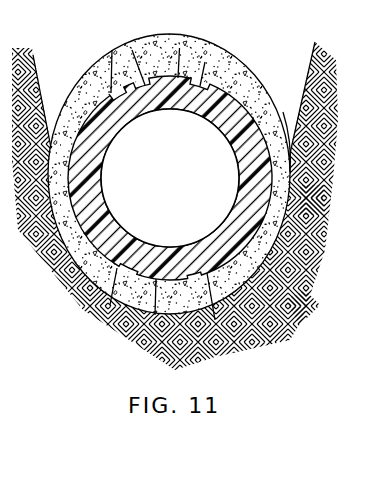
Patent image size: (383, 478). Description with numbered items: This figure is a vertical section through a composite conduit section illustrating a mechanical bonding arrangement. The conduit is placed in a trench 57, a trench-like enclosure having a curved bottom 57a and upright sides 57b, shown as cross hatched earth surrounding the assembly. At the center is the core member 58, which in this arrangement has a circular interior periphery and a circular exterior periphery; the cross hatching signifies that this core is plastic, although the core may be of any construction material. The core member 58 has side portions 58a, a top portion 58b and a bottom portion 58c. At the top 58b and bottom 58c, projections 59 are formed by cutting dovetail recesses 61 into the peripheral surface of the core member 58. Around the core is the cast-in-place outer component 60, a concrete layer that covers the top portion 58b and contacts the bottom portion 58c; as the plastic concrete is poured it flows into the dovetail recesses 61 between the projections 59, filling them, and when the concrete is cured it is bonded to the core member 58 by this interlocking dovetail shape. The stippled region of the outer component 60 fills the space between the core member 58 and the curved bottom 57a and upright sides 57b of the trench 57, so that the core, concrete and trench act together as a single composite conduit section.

The trench 57 is at (33, 60).
The curved bottom 57a is at (291, 292).
The upright sides 57b is at (309, 195).
The core member 58 is at (286, 179).
The side of core member 58a is at (300, 149).
The top portion of core member 58b is at (180, 48).
The bottom portion of core member 58c is at (110, 305).
The projections 59 is at (200, 86).
The cast-in-place outer component 60 is at (251, 72).
The dovetail recesses 61 is at (132, 50).